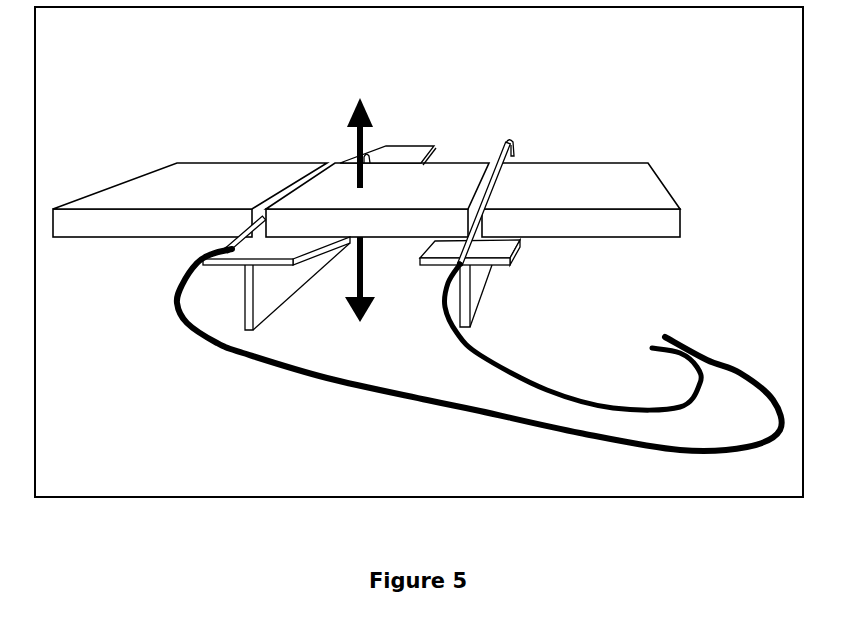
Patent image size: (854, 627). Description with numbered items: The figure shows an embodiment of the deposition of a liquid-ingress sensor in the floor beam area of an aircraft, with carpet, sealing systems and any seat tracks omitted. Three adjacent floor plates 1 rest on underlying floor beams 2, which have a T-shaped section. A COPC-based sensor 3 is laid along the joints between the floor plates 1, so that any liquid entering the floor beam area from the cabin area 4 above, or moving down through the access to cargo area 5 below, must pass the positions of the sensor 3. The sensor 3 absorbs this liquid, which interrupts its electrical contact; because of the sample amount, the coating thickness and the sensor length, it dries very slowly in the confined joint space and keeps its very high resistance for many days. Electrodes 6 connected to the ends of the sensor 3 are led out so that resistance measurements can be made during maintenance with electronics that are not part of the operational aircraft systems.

The floor plates 1 is at (366, 191).
The floor beams 2 is at (361, 283).
The COPC-based sensor 3 is at (369, 203).
The cabin area 4 is at (360, 129).
The access to cargo area 5 is at (362, 293).
The electrodes for resistance measurements 6 is at (479, 350).